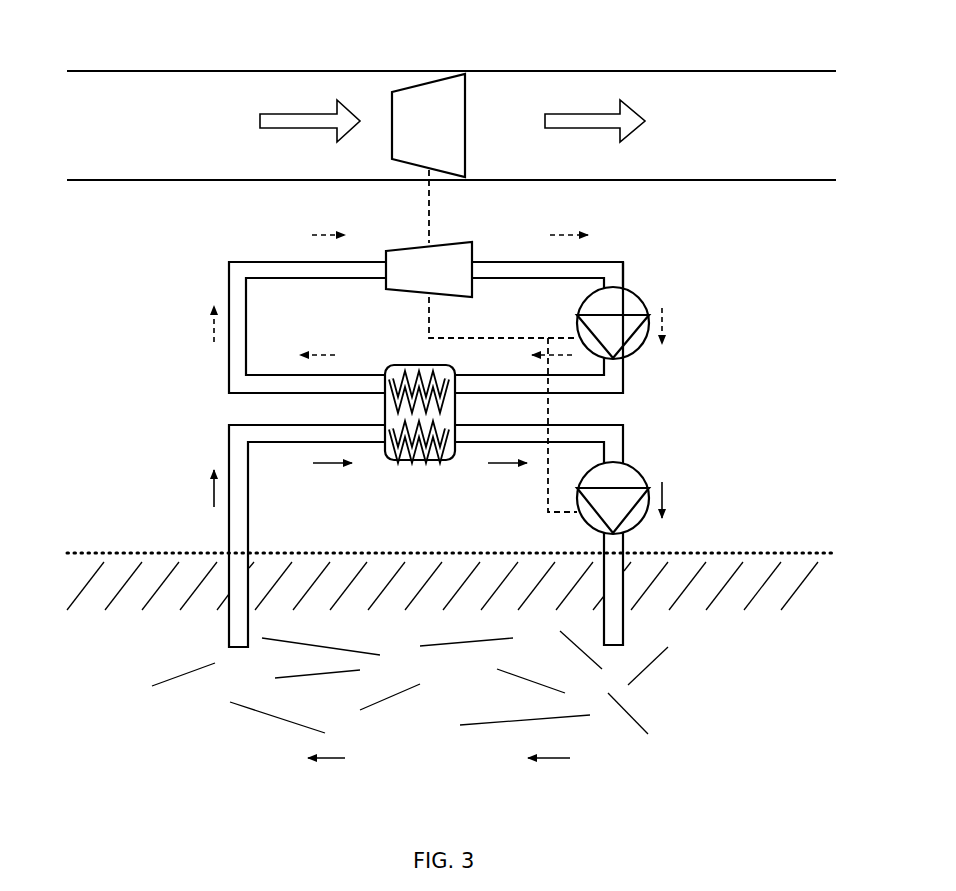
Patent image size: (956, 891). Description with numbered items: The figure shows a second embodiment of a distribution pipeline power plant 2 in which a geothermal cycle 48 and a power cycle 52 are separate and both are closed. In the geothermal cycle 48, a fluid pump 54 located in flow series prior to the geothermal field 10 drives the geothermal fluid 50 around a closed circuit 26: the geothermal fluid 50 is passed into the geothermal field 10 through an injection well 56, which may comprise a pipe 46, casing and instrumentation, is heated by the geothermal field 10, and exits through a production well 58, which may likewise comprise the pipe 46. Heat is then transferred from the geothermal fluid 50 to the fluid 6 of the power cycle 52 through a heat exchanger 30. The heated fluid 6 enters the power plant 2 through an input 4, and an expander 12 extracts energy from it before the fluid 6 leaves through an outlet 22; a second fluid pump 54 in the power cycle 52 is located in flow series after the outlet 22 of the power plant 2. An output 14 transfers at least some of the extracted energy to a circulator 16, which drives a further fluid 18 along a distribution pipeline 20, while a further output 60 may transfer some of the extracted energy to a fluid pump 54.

The distribution pipeline power plant 2 is at (710, 256).
The input 4 is at (348, 280).
The fluid 6 is at (262, 262).
The geothermal field 10 is at (412, 736).
The expander 12 is at (472, 244).
The output 14 is at (427, 214).
The circulator 16 is at (466, 125).
The further fluid 18 is at (260, 119).
The distribution pipeline 20 is at (612, 70).
The outlet 22 is at (490, 280).
The closed circuit 26 is at (664, 378).
The heat exchanger 30 is at (414, 463).
The pipe 46 is at (623, 272).
The geothermal cycle 48 is at (188, 692).
The geothermal fluid 50 is at (648, 693).
The power cycle 52 is at (165, 333).
The fluid pump 54 is at (641, 306).
The injection well 56 is at (605, 548).
The production well 58 is at (249, 551).
The further output 60 is at (425, 297).